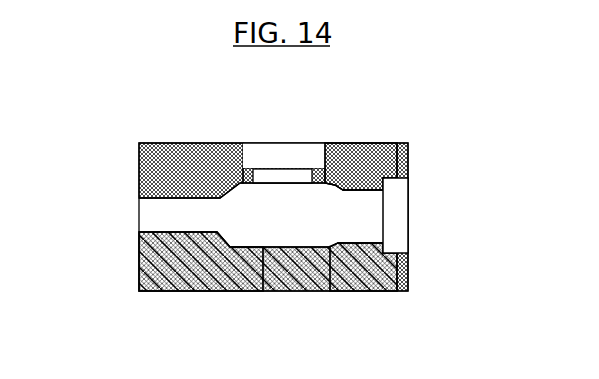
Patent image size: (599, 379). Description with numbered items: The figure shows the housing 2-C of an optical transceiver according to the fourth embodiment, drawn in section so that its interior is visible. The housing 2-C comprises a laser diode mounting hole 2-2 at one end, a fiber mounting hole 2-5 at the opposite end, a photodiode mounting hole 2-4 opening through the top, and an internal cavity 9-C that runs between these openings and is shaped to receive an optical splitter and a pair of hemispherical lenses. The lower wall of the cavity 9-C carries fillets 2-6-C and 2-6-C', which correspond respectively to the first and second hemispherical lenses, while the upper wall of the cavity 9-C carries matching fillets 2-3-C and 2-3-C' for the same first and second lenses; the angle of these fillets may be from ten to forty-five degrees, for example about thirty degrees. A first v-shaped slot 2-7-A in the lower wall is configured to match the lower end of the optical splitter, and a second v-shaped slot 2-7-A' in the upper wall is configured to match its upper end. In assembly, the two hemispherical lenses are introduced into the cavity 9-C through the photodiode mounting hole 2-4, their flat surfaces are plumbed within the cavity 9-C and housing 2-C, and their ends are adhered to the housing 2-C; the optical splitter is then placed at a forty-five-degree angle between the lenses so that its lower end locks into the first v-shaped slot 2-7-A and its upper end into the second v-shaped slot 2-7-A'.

The housing 2-C is at (246, 217).
The fillet 2-3-C' is at (168, 140).
The photodiode mounting hole 2-4 is at (261, 138).
The fillet 2-3-C is at (398, 197).
The second v-shaped slot 2-7-A' is at (398, 127).
The fillet 2-6-C' is at (190, 283).
The first v-shaped slot 2-7-A is at (309, 292).
The fillet 2-6-C is at (381, 287).
The laser diode mounting hole 2-2 is at (429, 215).
The fiber mounting hole 2-5 is at (162, 215).
The internal cavity 9-C is at (306, 164).